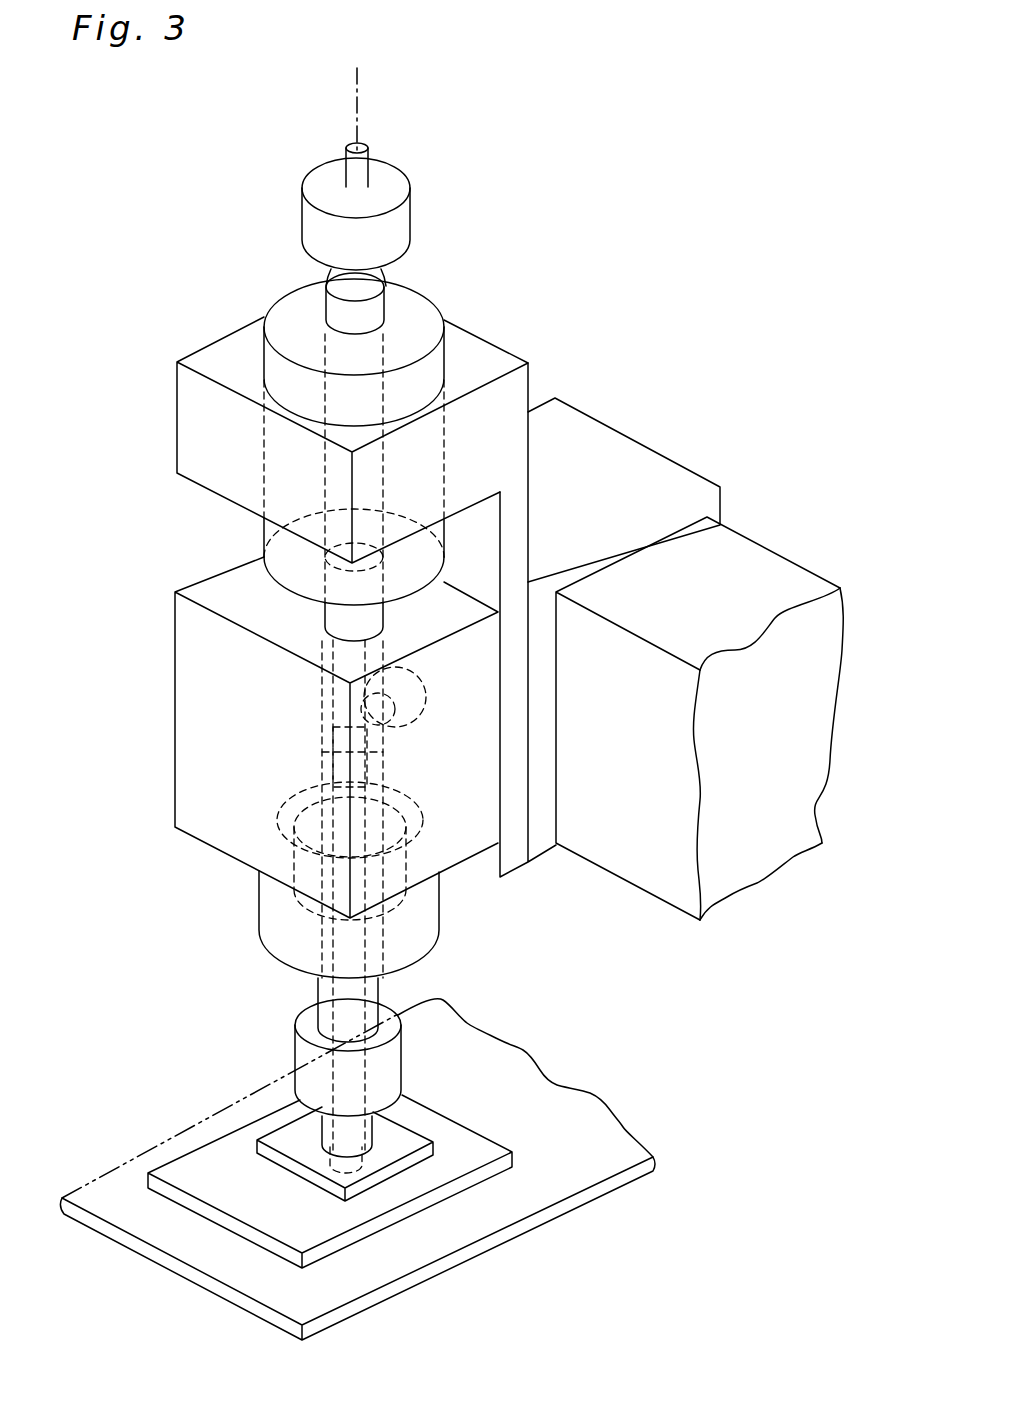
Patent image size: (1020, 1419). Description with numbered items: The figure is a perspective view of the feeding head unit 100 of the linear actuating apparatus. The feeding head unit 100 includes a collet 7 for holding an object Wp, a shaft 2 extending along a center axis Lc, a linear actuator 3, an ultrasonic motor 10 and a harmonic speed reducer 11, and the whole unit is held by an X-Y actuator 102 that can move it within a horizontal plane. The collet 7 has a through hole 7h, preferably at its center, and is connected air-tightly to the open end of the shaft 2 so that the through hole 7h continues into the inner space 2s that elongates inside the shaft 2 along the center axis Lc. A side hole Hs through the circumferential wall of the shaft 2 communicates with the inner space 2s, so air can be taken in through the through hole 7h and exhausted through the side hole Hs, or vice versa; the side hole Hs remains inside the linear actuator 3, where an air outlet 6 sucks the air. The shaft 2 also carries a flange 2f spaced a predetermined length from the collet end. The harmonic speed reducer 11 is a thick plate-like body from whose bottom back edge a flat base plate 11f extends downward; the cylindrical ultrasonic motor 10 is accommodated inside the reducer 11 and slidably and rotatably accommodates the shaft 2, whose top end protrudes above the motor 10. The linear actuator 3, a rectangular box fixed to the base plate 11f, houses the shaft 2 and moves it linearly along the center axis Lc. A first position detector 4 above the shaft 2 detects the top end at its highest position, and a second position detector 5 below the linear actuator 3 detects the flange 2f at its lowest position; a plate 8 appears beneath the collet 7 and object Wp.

The center axis Lc is at (359, 87).
The first position detector 4 is at (395, 223).
The shaft 2 is at (392, 423).
The inner space 2s is at (318, 1010).
The flange 2f is at (320, 752).
The ultrasonic motor 10 is at (288, 312).
The harmonic speed reducer 11 is at (205, 407).
The base plate 11f is at (523, 528).
The feeding head unit 100 is at (671, 557).
The X-Y actuator 102 is at (671, 624).
The linear actuator 3 is at (202, 682).
The side hole Hs is at (317, 747).
The air outlet 6 is at (427, 697).
The second position detector 5 is at (423, 800).
The collet 7 is at (290, 1135).
The through hole 7h is at (397, 1143).
The table 8 is at (597, 1163).
The object Wp is at (560, 1115).